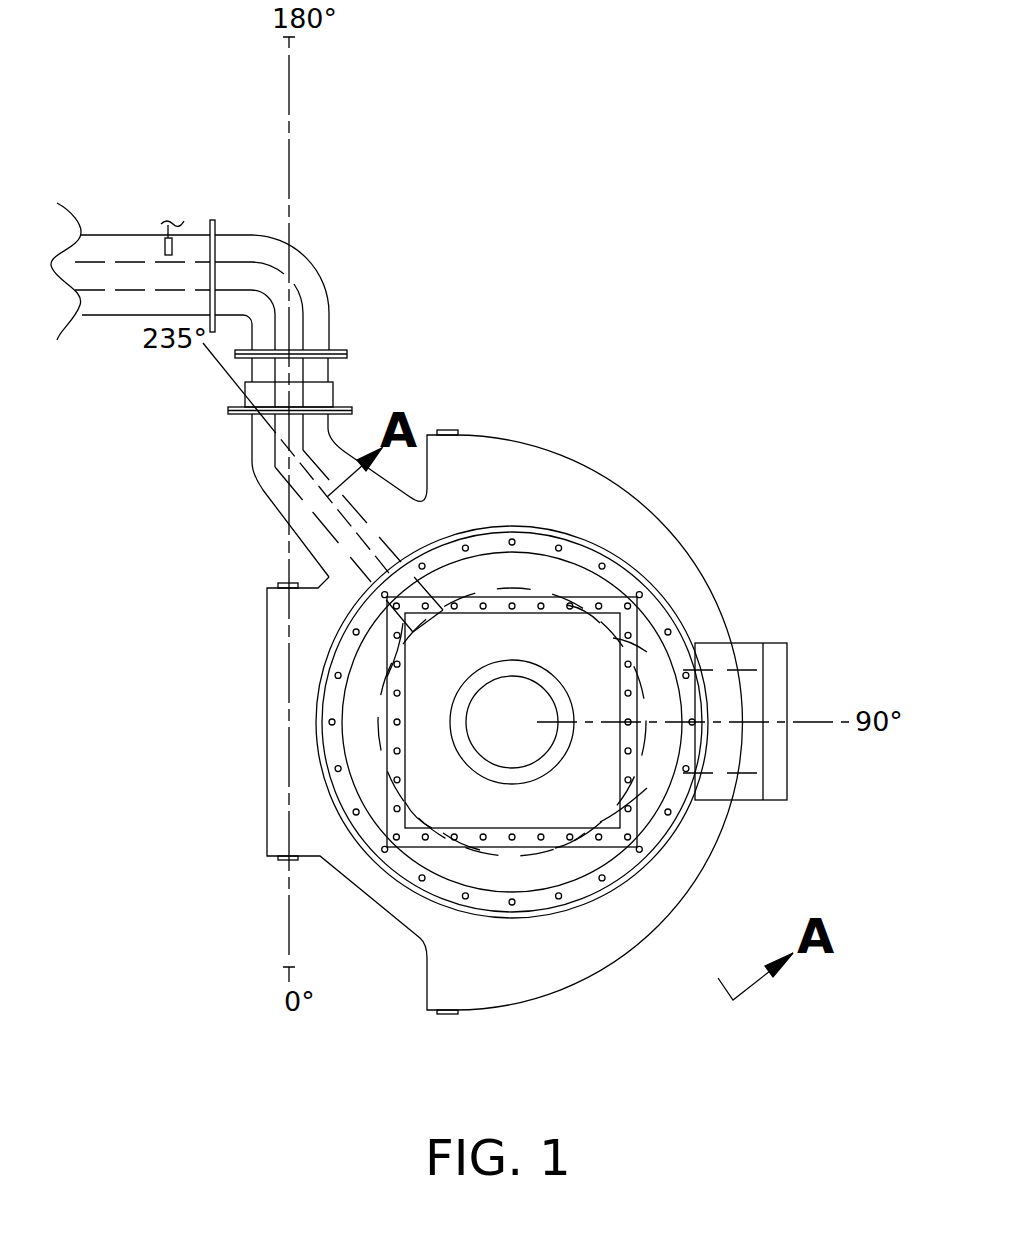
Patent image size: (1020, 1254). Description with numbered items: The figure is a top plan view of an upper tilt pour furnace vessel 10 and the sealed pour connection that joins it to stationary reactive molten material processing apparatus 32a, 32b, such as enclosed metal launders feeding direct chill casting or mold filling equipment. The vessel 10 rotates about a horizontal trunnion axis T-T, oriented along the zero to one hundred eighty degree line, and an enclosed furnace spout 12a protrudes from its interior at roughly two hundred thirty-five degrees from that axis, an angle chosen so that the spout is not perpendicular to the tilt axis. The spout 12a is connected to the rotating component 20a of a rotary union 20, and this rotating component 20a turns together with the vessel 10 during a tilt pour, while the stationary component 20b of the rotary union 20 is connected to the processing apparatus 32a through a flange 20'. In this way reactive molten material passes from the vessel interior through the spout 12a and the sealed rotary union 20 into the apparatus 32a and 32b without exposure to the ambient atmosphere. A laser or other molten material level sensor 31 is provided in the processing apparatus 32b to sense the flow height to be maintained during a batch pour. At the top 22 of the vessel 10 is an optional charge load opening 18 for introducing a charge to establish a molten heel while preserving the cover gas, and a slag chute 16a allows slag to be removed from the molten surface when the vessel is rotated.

The upper tilt pour furnace vessel 10 is at (716, 420).
The enclosed furnace spout 12a is at (357, 525).
The slag chute 16a is at (737, 703).
The charge load opening 18 is at (610, 607).
The rotary union 20 is at (265, 406).
The rotating component 20a is at (253, 395).
The stationary component 20b is at (260, 370).
The flange 20' is at (262, 435).
The top 22 is at (523, 733).
The molten reactive material level sensor 31 is at (173, 247).
The reactive molten material processing apparatus 32a is at (307, 283).
The reactive molten material processing apparatus 32b is at (151, 246).